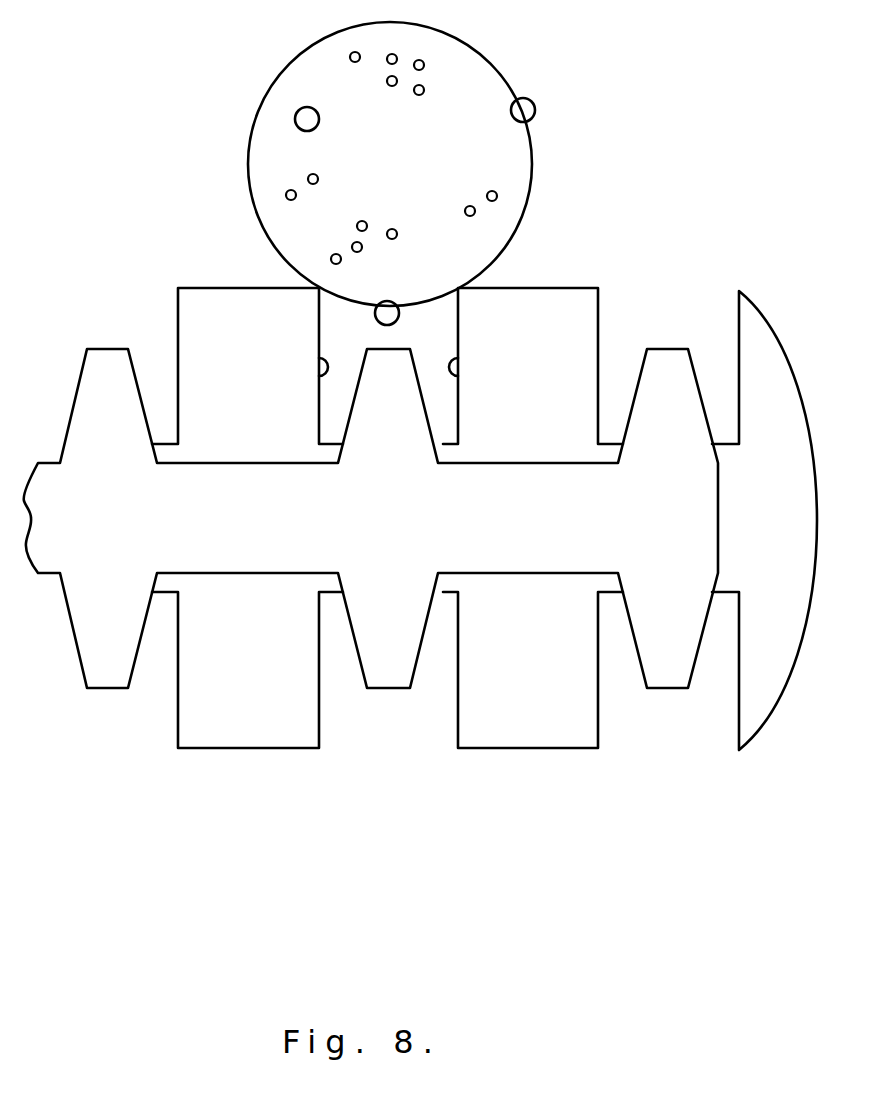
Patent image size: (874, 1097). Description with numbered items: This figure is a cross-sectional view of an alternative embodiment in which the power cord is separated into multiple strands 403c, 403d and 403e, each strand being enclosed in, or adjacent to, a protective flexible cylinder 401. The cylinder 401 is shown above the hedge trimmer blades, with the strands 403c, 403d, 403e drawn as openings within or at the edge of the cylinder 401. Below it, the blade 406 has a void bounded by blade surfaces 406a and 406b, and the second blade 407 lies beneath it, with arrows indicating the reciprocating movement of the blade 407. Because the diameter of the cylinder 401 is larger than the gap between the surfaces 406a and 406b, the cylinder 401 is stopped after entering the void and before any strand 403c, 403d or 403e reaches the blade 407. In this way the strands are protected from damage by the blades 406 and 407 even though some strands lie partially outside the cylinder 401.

The protective flexible cylinder 401 is at (470, 173).
The strand of power cord 403c is at (300, 106).
The strand of power cord 403d is at (535, 98).
The strand of power cord 403e is at (387, 298).
The blade 406 is at (277, 404).
The blade surface 406a is at (320, 358).
The blade surface 406b is at (457, 362).
The blade 407 is at (441, 507).